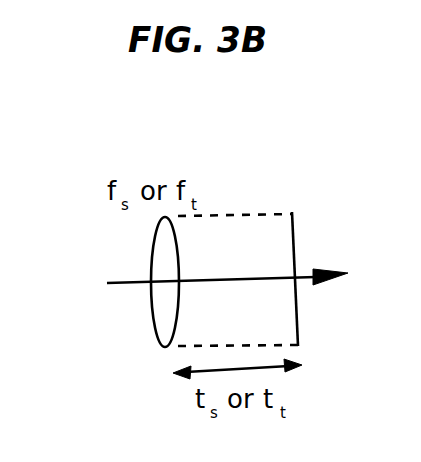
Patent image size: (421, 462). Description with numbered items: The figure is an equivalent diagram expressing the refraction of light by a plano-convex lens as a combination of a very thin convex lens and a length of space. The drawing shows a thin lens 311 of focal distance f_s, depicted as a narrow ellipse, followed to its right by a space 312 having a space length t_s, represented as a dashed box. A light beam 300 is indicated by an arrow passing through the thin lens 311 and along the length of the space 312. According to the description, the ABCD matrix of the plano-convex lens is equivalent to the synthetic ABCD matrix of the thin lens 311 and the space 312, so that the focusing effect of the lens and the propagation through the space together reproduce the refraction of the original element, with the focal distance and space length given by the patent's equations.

The light beam 300 is at (227, 277).
The thin lens 311 is at (156, 298).
The space 312 is at (253, 242).